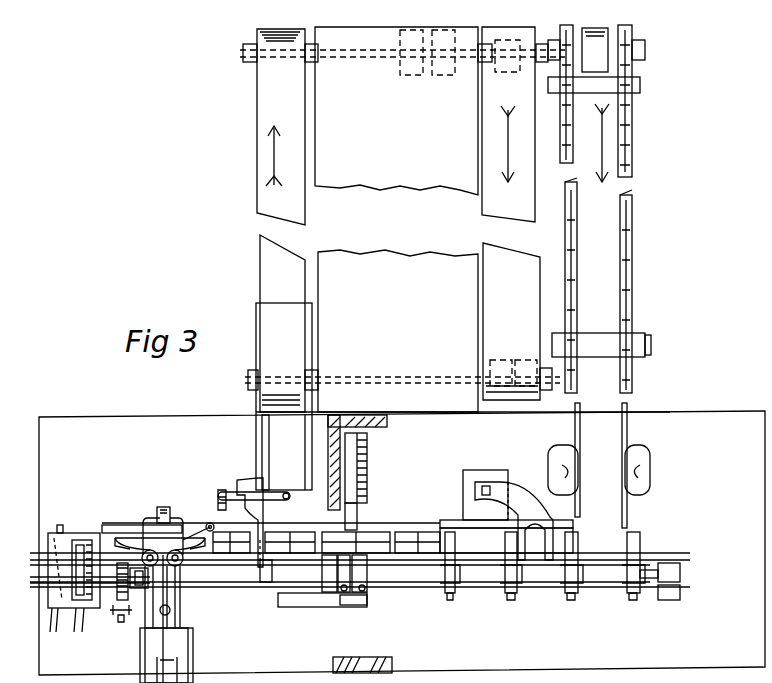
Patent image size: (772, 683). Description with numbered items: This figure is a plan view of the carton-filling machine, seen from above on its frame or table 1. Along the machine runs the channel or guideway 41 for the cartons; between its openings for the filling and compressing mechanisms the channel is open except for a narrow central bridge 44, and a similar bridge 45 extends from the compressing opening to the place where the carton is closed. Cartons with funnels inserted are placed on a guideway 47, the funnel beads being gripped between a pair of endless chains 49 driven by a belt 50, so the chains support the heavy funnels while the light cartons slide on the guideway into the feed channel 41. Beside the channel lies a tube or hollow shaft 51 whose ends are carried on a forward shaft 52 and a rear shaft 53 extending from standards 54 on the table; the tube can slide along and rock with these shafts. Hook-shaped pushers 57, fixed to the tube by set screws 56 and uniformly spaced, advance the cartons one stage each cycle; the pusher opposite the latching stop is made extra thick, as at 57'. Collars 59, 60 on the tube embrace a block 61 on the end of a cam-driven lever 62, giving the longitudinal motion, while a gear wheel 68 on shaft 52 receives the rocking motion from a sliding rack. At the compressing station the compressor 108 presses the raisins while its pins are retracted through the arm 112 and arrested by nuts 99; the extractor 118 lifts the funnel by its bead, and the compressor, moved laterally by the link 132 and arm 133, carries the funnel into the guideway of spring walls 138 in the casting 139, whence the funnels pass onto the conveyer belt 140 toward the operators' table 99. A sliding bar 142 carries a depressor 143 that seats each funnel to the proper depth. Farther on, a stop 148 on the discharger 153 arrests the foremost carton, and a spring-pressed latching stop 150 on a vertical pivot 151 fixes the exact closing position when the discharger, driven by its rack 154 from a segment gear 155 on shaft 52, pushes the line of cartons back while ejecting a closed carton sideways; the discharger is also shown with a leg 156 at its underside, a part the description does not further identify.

The frame or table 1 is at (402, 539).
The channel or guideway 41 is at (506, 536).
The bridge 44 is at (355, 530).
The bridge 45 is at (240, 550).
The guideway 47 is at (599, 209).
The endless chains 49 is at (566, 16).
The belt 50 is at (511, 213).
The tube or hollow shaft 51 is at (532, 585).
The forward shaft 52 is at (236, 585).
The rear shaft 53 is at (681, 572).
The standards 54 is at (405, 585).
The set screws 56 is at (455, 597).
The hook-shaped pushers 57 is at (542, 573).
The pusher of extra thickness 57' is at (228, 510).
The collar 59 is at (329, 592).
The collar 60 is at (372, 590).
The block 61 is at (345, 593).
The lever 62 is at (363, 593).
The gear wheel 68 is at (116, 592).
The table 99 is at (396, 219).
The compressor 108 is at (278, 491).
The arm 112 is at (232, 505).
The extractor 118 is at (256, 490).
The link 132 is at (358, 500).
The arm 133 is at (368, 441).
The spring walls 138 is at (268, 476).
The casting 139 is at (257, 436).
The conveyer belt 140 is at (281, 220).
The vertically sliding bar 142 is at (491, 486).
The depressor 143 is at (514, 521).
The stop 148 is at (63, 527).
The latching stop 150 is at (196, 522).
The vertical pivot 151 is at (209, 521).
The discharger 153 is at (60, 551).
The rack 154 is at (84, 622).
The segment gear 155 is at (74, 566).
The leg 156 is at (58, 634).